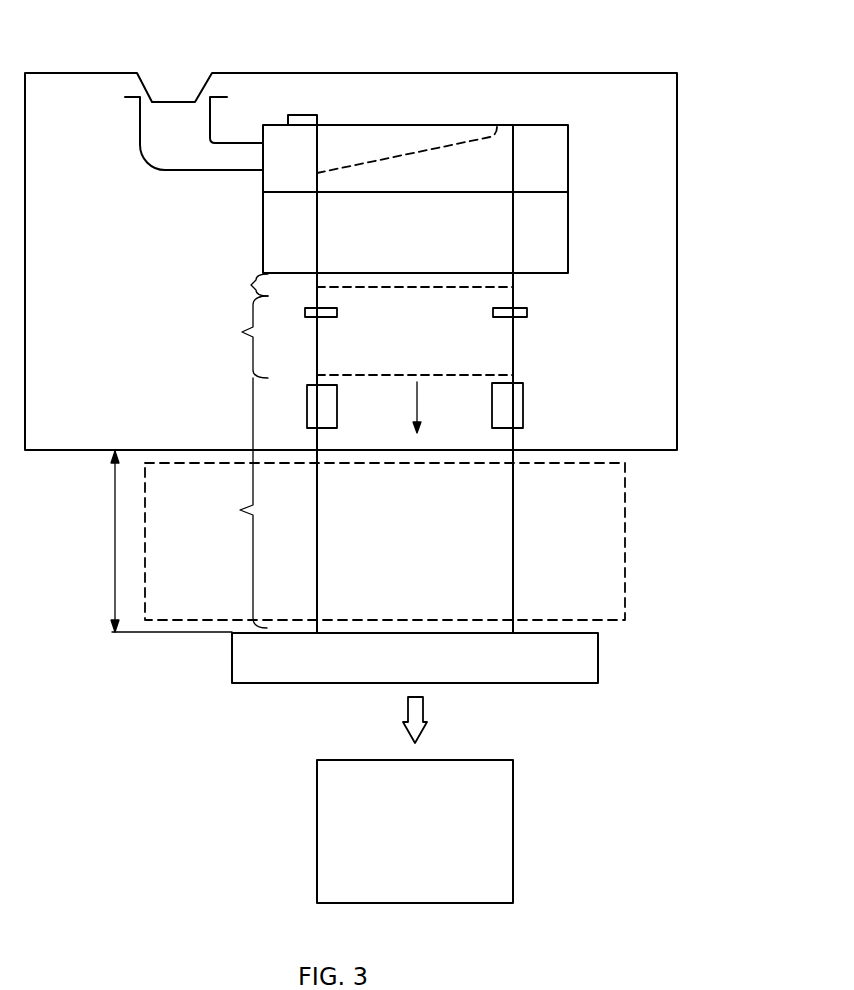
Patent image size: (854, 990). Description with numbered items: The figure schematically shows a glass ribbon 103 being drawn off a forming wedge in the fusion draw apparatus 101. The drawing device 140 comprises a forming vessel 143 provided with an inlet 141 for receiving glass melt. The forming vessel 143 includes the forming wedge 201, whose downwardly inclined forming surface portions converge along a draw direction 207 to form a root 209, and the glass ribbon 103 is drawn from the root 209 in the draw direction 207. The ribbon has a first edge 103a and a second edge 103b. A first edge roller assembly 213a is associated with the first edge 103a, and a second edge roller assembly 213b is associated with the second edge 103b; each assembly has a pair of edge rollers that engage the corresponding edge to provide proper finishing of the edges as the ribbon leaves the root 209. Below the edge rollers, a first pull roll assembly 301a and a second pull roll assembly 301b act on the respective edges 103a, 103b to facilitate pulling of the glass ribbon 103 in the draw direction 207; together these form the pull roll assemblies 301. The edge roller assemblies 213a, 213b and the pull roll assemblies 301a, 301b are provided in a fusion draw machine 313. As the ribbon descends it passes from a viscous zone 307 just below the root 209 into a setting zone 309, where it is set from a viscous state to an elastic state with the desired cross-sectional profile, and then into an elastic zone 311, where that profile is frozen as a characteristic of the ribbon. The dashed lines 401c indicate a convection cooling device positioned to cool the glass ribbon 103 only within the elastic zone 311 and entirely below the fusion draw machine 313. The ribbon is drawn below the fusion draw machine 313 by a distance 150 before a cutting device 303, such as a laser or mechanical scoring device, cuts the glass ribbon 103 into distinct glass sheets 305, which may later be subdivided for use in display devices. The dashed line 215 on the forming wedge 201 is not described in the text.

The fusion draw apparatus 101 is at (694, 178).
The glass ribbon 103 is at (500, 600).
The first edge 103a is at (317, 557).
The second edge 103b is at (513, 558).
The drawing device 140 is at (677, 103).
The inlet 141 is at (140, 128).
The forming vessel 143 is at (448, 125).
The distance 150 is at (164, 541).
The forming wedge 201 is at (508, 115).
The draw direction 207 is at (417, 395).
The root 209 is at (418, 277).
The first edge roller assembly 213a is at (337, 312).
The second edge roller assembly 213b is at (493, 312).
The inclined surface 215 is at (414, 150).
The clamps 301 is at (556, 407).
The first pull roll assembly 301a is at (337, 415).
The second pull roll assembly 301b is at (523, 388).
The cutting device 303 is at (624, 649).
The glass sheets 305 is at (513, 823).
The viscous zone 307 is at (235, 282).
The setting zone 309 is at (227, 337).
The elastic zone 311 is at (234, 503).
The fusion draw machine 313 is at (720, 278).
The dashed lines 401c is at (625, 509).